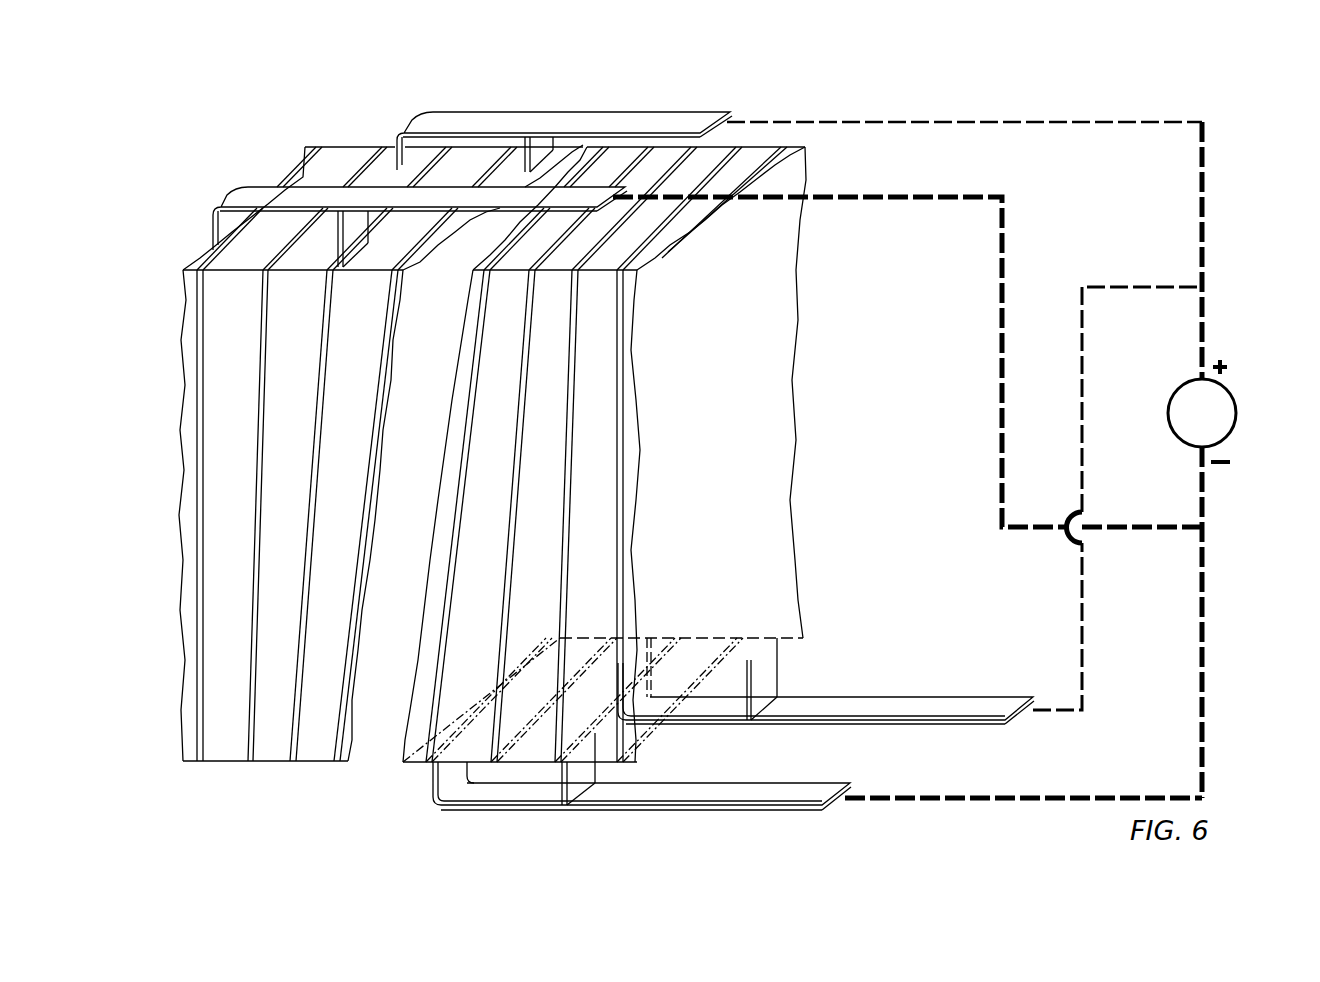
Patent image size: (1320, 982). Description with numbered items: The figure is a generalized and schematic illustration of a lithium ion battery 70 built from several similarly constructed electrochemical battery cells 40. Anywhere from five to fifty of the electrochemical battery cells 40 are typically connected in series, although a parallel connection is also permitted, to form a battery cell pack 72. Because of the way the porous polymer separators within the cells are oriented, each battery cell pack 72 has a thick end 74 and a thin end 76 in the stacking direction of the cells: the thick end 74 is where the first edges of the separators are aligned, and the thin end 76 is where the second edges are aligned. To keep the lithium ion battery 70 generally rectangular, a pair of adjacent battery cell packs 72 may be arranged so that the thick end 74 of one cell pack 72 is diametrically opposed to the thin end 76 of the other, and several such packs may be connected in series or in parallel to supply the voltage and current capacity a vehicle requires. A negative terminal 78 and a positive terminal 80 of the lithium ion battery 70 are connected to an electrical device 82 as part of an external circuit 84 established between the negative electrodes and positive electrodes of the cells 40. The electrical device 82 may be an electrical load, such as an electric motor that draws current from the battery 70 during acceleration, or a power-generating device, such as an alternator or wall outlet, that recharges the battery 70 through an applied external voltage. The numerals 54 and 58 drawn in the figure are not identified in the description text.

The electrochemical battery cell 40 is at (222, 752).
The first electrode tab 54 is at (200, 432).
The second electrode tab 58 is at (260, 367).
The lithium ion battery 70 is at (400, 93).
The battery cell pack 72 is at (340, 146).
The thick end 74 is at (173, 285).
The thin end 76 is at (822, 158).
The negative terminal 78 is at (272, 195).
The positive terminal 80 is at (610, 125).
The electrical device 82 is at (1217, 397).
The external circuit 84 is at (1208, 555).